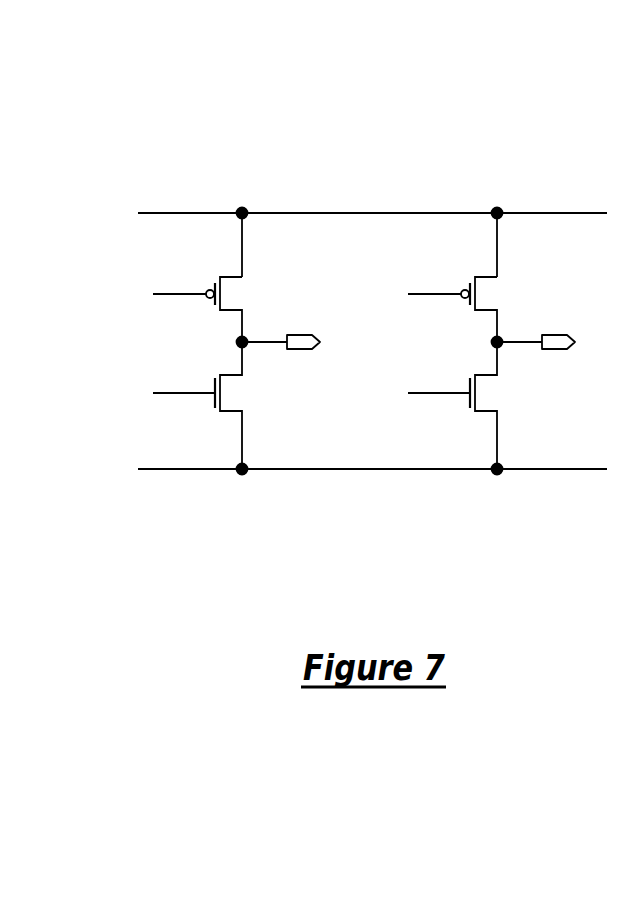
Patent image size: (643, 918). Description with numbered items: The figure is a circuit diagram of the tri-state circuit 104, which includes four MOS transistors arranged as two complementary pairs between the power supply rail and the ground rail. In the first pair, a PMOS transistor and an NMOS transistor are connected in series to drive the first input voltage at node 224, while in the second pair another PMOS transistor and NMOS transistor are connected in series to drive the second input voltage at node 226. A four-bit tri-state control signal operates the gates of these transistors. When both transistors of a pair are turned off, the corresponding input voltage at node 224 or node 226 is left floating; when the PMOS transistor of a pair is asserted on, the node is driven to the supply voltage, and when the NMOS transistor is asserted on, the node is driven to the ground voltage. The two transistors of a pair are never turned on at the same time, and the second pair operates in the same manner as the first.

The tri-state circuit 104 is at (556, 134).
The node 224 is at (237, 342).
The node 226 is at (492, 342).